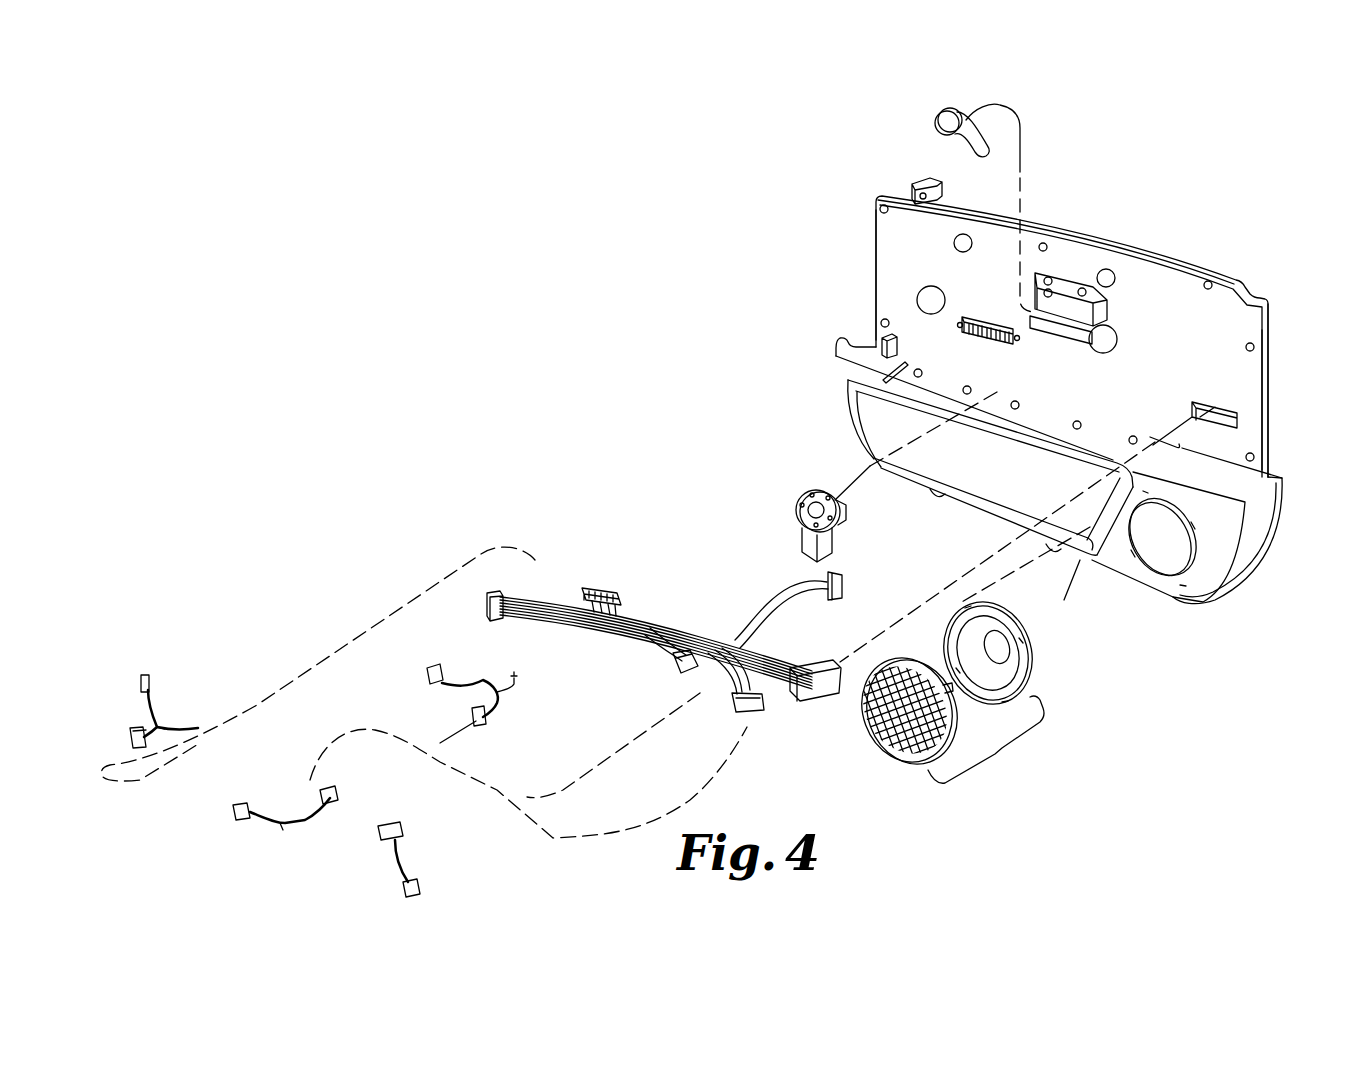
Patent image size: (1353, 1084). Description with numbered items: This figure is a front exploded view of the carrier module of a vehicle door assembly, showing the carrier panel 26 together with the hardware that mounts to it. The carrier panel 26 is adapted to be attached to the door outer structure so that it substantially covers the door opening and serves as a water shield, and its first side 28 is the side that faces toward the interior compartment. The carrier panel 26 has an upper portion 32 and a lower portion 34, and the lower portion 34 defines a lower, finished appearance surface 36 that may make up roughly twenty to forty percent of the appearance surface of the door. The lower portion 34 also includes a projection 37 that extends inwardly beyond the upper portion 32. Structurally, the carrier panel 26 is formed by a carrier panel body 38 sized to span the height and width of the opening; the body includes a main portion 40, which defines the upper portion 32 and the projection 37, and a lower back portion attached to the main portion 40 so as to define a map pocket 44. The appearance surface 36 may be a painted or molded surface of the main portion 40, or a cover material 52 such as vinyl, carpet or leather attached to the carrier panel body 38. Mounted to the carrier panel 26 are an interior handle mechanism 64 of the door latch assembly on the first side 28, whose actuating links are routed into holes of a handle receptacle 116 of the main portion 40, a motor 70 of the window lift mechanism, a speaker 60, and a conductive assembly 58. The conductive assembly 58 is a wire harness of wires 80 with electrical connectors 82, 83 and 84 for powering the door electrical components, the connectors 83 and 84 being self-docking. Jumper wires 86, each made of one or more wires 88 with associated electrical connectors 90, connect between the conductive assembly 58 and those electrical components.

The carrier panel 26 is at (1268, 326).
The first side 28 is at (882, 237).
The upper portion 32 is at (884, 283).
The lower portion 34 is at (842, 408).
The lower appearance surface 36 is at (882, 428).
The projection 37 is at (1080, 563).
The carrier panel body 38 is at (1268, 380).
The main portion 40 is at (1266, 414).
The map pocket 44 is at (1113, 454).
The cover material 52 is at (868, 470).
The conductive assembly 58 is at (685, 657).
The speaker 60 is at (1003, 752).
The interior handle mechanism 64 is at (937, 133).
The motor 70 is at (798, 520).
The wires 80 is at (714, 640).
The electrical connector 82 is at (848, 590).
The electrical connector 83 is at (605, 590).
The electrical connector 84 is at (812, 689).
The jumper wire 86 is at (158, 718).
The wires 88 is at (198, 728).
The electrical connectors 90 is at (149, 683).
The handle receptacle 116 is at (1070, 285).